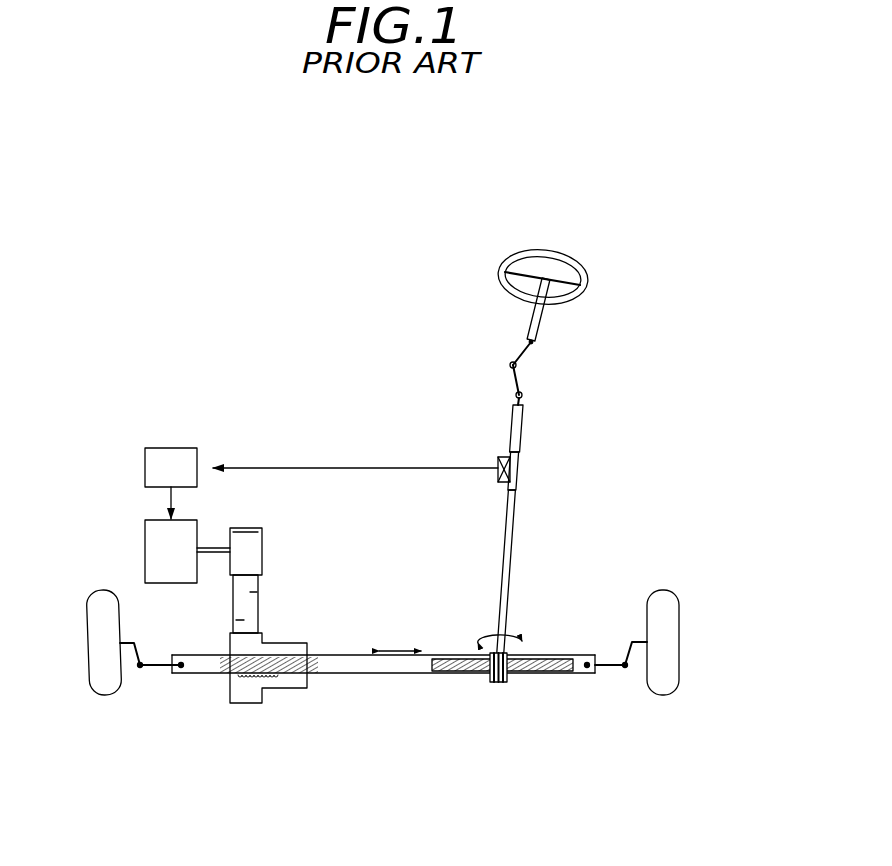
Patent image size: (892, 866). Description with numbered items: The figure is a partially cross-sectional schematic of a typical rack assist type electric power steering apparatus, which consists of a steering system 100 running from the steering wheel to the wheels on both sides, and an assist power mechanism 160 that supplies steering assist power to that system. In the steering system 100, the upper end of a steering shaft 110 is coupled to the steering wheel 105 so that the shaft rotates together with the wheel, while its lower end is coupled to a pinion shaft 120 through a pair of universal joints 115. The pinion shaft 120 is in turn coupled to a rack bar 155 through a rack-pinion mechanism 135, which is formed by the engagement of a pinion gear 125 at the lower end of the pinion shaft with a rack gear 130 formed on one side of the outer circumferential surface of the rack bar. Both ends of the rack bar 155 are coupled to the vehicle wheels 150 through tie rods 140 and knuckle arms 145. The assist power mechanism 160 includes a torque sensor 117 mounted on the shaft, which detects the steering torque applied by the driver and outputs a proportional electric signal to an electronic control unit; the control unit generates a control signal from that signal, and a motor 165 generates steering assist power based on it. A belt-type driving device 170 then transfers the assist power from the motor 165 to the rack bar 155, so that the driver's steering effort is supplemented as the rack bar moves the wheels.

The steering system 100 is at (582, 254).
The steering wheel 105 is at (500, 272).
The steering shaft 110 is at (541, 318).
The universal joints 115 is at (516, 364).
The torque sensor 117 is at (503, 456).
The pinion shaft 120 is at (518, 510).
The pinion gear 125 is at (500, 685).
The rack gear 130 is at (545, 672).
The rack-pinion mechanism 135 is at (547, 738).
The tie rods 140 is at (607, 668).
The knuckle arms 145 is at (625, 655).
The wheels 150 is at (96, 620).
The rack bar 155 is at (393, 670).
The assist power mechanism 160 is at (278, 410).
The motor 165 is at (145, 530).
The belt-type driving device 170 is at (263, 592).